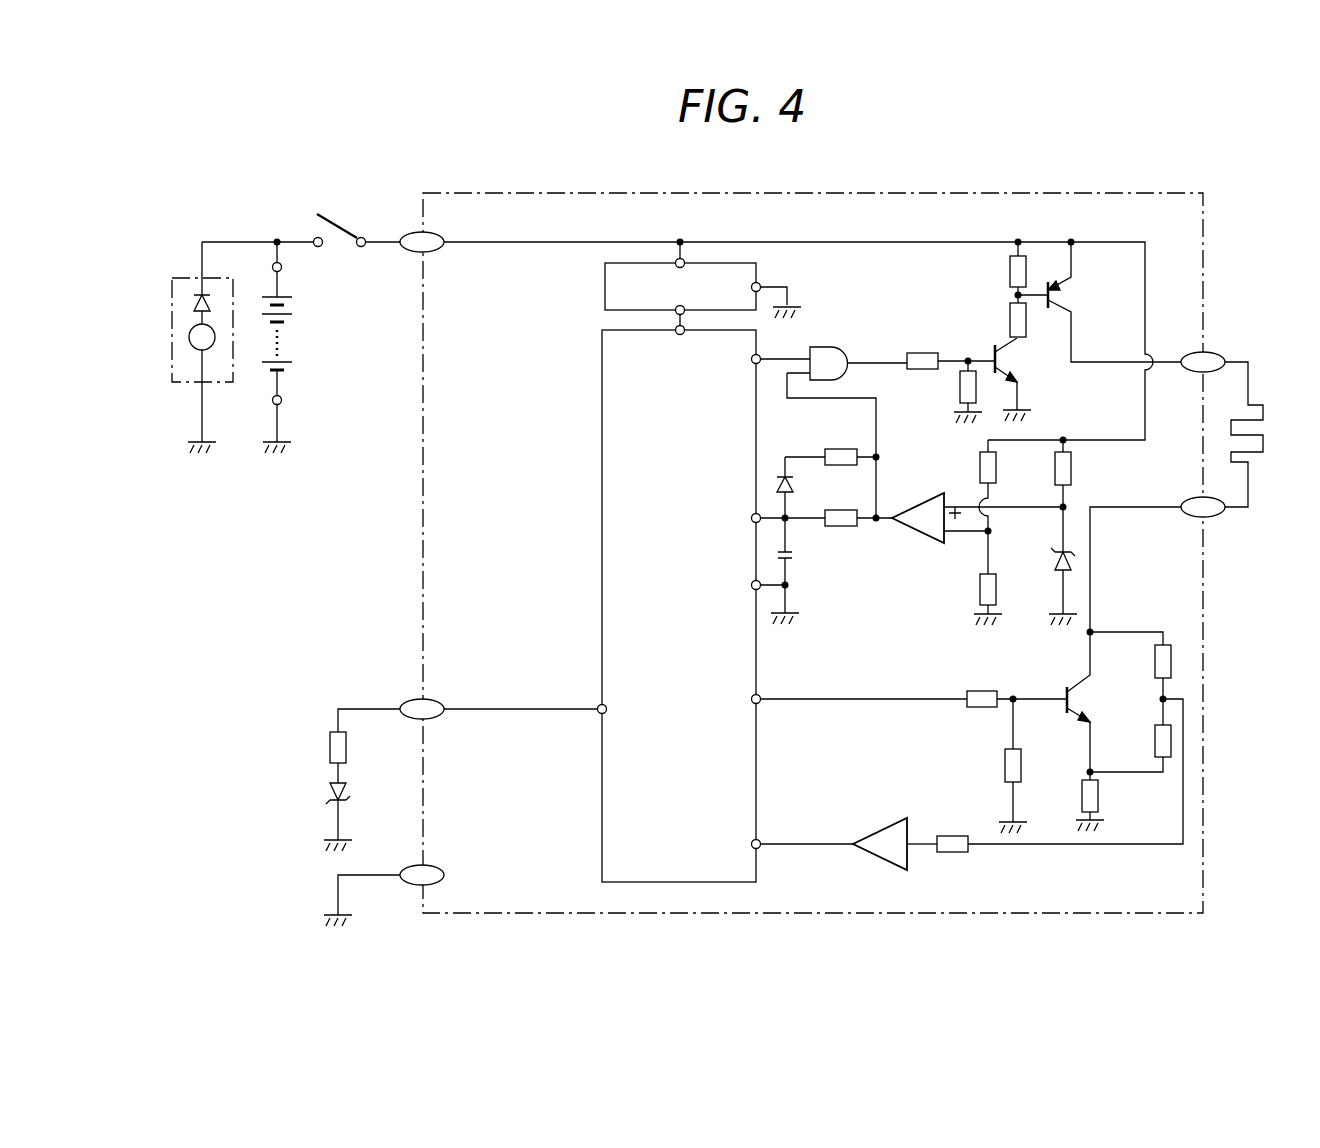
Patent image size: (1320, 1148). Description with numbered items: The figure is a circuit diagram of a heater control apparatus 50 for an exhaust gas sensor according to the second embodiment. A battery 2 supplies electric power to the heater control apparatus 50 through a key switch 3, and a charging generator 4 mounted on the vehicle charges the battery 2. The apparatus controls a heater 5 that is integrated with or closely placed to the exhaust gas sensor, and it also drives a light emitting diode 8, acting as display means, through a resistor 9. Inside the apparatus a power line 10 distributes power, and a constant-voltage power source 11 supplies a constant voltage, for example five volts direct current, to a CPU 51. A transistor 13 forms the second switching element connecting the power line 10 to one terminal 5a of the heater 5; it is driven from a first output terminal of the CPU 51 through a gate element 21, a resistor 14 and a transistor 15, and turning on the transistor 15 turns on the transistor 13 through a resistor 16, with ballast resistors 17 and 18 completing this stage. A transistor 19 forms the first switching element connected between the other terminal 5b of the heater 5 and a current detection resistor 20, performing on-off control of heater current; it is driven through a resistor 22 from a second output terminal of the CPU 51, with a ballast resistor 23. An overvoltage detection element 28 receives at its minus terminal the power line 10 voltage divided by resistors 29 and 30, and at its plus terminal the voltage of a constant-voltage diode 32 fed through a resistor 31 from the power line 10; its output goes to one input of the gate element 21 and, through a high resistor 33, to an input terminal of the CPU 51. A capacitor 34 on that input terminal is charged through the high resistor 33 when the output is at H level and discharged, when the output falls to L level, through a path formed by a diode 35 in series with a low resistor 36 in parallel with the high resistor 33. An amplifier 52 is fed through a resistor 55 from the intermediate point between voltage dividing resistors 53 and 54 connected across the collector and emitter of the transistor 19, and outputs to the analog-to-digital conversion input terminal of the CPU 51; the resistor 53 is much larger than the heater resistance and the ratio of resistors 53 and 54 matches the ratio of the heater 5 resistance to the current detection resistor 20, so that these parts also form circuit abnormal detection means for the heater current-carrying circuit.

The battery 2 is at (284, 362).
The key switch 3 is at (340, 223).
The charging generator 4 is at (185, 278).
The heater 5 is at (1258, 405).
The one terminal 5a is at (1195, 353).
The other terminal 5b is at (1195, 498).
The light emitting diode 8 is at (330, 793).
The resistor 9 is at (330, 750).
The power line 10 is at (868, 242).
The constant-voltage power source 11 is at (605, 288).
The transistor 13 is at (1065, 295).
The resistor 14 is at (920, 352).
The transistor 15 is at (1011, 359).
The resistor 16 is at (1010, 320).
The ballast resistor 17 is at (1010, 270).
The ballast resistor 18 is at (960, 387).
The transistor 19 is at (1081, 699).
The current detection resistor 20 is at (1082, 797).
The gate element 21 is at (822, 349).
The resistor 22 is at (983, 691).
The ballast resistor 23 is at (1005, 767).
The overvoltage detection element 28 is at (915, 500).
The resistor 29 is at (980, 472).
The resistor 30 is at (980, 590).
The resistor 31 is at (1055, 470).
The constant-voltage diode 32 is at (1056, 556).
The high resistor 33 is at (842, 510).
The capacitor 34 is at (794, 555).
The diode 35 is at (794, 489).
The low resistor 36 is at (840, 449).
The heater control apparatus 50 is at (1000, 193).
The CPU 51 is at (602, 588).
The amplifier 52 is at (880, 829).
The voltage dividing resistor 53 is at (1155, 662).
The voltage dividing resistor 54 is at (1155, 740).
The resistor 55 is at (951, 836).